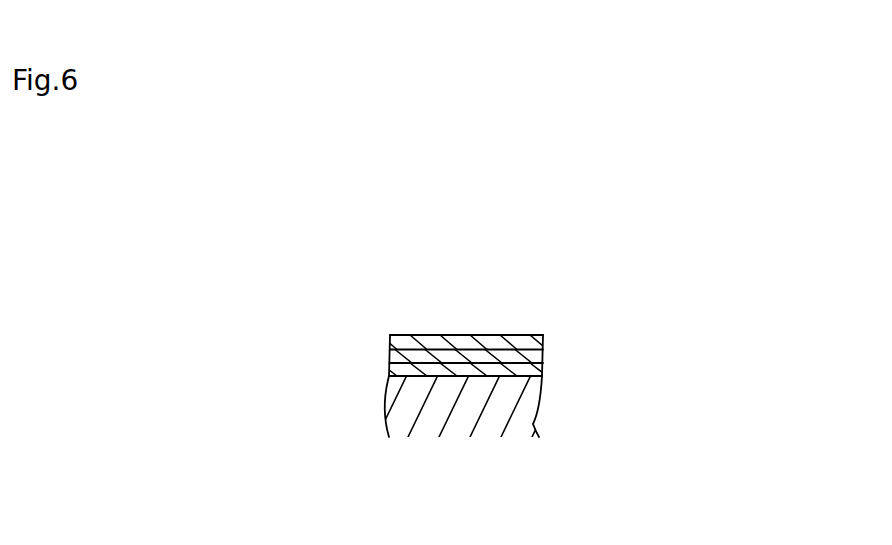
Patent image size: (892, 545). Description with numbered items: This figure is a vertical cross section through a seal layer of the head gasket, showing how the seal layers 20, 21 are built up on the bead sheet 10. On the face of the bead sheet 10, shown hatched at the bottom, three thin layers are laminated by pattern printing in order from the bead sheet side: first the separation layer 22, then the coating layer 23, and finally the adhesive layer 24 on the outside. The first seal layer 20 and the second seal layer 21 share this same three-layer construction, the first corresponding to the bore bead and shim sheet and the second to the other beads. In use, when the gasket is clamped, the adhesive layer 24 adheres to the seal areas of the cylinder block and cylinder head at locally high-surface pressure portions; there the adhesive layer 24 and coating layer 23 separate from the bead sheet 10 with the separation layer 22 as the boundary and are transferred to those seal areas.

The bead sheet 10 is at (398, 403).
The first seal layer 20 is at (508, 319).
The second seal layer 21 is at (508, 319).
The separation layer 22 is at (543, 364).
The coating layer 23 is at (543, 355).
The adhesive layer 24 is at (543, 337).